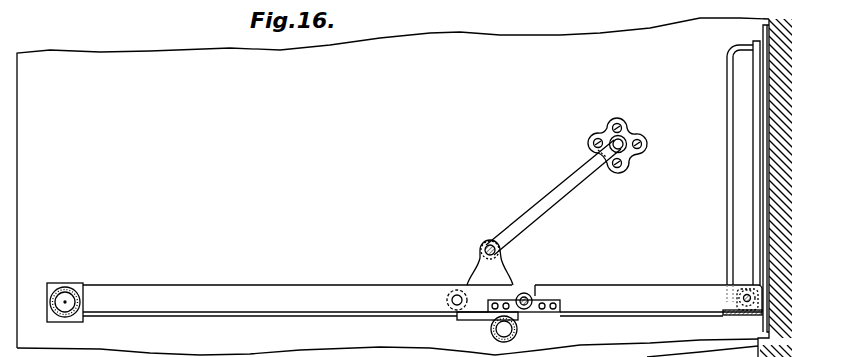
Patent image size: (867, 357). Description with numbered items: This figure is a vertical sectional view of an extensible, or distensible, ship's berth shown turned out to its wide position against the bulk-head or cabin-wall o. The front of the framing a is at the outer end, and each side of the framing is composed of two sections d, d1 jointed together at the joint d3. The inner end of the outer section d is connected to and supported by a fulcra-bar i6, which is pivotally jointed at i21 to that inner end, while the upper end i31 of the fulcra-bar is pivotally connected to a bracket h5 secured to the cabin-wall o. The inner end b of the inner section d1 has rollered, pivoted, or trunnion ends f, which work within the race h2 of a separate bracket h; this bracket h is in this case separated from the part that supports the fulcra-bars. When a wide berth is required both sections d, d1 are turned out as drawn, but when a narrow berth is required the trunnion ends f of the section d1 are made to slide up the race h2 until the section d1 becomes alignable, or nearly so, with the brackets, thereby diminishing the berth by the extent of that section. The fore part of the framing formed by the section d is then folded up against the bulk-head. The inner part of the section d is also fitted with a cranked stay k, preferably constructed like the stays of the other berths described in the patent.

The bulk-head or cabin-wall o is at (409, 178).
The front of the framing a is at (65, 289).
The framing side section d is at (300, 288).
The framing side section d1 is at (648, 286).
The joint d3 is at (527, 294).
The inner end of section b is at (690, 313).
The rollered, pivoted, or trunnion ends f is at (744, 300).
The cranked stay k is at (517, 330).
The bracket h is at (733, 205).
The race h2 is at (742, 101).
The bracket h5 is at (648, 148).
The upper end of fulcra-bar i31 is at (618, 143).
The fulcra-bar i6 is at (553, 197).
The pivot joint i21 is at (487, 243).